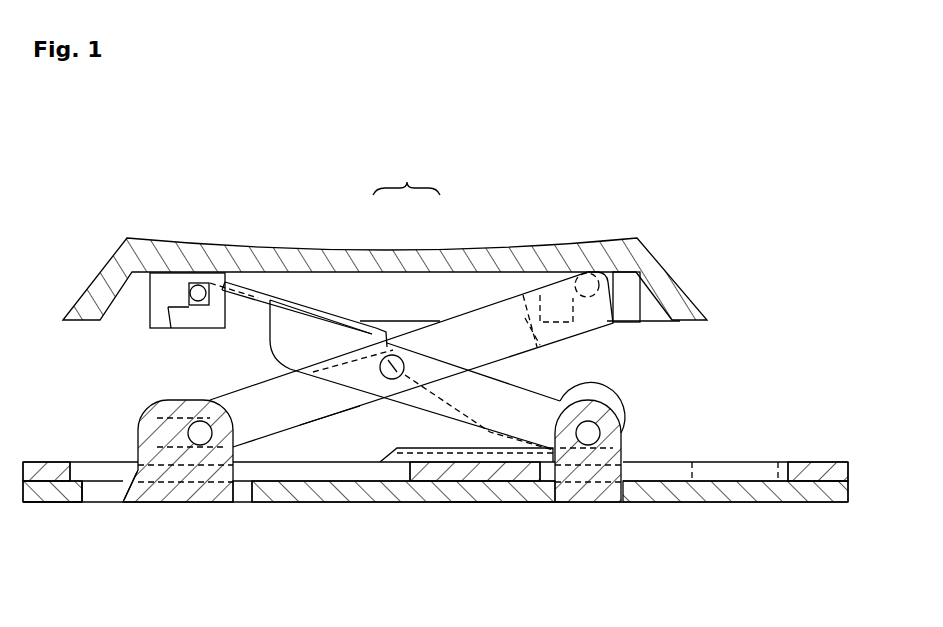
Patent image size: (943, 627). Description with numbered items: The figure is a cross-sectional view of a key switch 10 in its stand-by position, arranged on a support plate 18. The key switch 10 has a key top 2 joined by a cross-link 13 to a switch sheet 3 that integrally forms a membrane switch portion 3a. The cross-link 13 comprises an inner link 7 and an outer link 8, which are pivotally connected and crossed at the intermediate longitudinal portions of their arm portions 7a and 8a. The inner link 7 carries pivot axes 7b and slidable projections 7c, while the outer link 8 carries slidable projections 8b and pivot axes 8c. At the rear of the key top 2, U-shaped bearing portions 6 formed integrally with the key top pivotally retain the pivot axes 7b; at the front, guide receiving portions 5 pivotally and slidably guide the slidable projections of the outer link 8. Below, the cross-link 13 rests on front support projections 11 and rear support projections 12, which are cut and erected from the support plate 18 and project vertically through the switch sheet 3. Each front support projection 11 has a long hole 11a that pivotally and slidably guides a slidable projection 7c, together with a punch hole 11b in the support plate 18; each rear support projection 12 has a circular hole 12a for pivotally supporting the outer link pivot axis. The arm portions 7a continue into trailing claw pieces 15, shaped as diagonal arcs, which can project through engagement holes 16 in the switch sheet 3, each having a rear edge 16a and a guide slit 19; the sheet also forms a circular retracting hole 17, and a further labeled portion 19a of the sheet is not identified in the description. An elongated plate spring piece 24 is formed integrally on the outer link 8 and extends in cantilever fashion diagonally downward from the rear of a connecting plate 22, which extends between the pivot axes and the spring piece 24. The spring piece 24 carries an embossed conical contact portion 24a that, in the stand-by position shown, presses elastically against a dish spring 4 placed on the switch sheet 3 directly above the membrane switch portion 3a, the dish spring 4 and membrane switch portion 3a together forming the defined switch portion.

The key top 2 is at (537, 262).
The switch sheet 3 is at (823, 457).
The membrane switch portion 3a is at (510, 502).
The dish spring 4 is at (403, 462).
The guide receiving portion 5 is at (163, 293).
The U-shaped bearing portion 6 is at (622, 288).
The inner link 7 is at (473, 323).
The arm portion 7a is at (333, 397).
The pivot axis 7b is at (593, 272).
The slidable projection 7c is at (197, 430).
The outer link 8 is at (318, 343).
The arm portion 8a is at (545, 395).
The slidable projection 8b is at (200, 287).
The pivot axis 8c is at (597, 424).
The key switch 10 is at (747, 315).
The front support projection 11 is at (203, 503).
The long hole 11a is at (177, 432).
The punch hole 11b is at (93, 500).
The rear support projection 12 is at (607, 502).
The circular hole 12a is at (605, 433).
The cross-link 13 is at (406, 176).
The trailing claw piece 15 is at (128, 503).
The engagement hole 16 is at (98, 468).
The rear edge 16a is at (258, 472).
The circular retracting hole 17 is at (747, 458).
The support plate 18 is at (787, 502).
The guide slit 19 is at (308, 480).
The spacer opening 19a is at (656, 470).
The connecting plate 22 is at (296, 302).
The plate spring piece 24 is at (395, 380).
The conical contact portion 24a is at (505, 410).